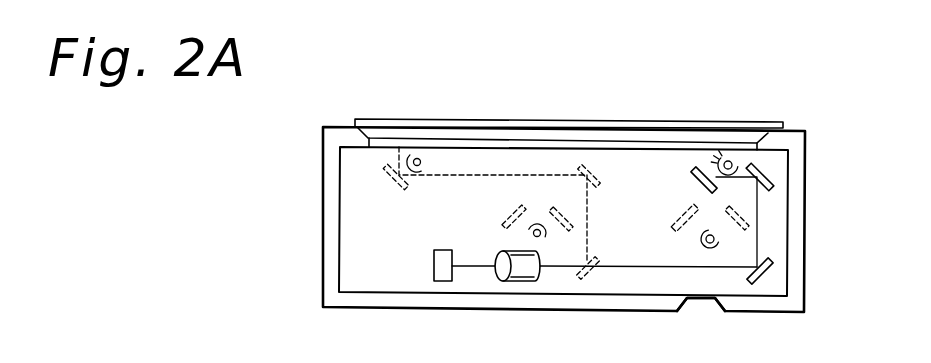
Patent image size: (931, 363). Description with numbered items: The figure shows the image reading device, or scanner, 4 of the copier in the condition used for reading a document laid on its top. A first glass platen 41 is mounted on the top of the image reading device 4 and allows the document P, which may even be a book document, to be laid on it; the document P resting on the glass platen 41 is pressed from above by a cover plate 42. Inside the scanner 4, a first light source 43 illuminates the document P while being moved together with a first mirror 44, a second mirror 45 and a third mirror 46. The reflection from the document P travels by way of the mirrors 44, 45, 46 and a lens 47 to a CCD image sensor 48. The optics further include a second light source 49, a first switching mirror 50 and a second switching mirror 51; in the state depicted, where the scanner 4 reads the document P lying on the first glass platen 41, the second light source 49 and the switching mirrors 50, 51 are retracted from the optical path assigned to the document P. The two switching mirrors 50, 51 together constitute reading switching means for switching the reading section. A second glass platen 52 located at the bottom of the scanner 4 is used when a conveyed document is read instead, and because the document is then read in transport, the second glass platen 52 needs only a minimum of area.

The image reading device 4 is at (822, 129).
The first glass platen 41 is at (497, 145).
The cover plate 42 is at (390, 119).
The document P is at (445, 137).
The first light source 43 is at (733, 158).
The first mirror 44 is at (694, 171).
The second mirror 45 is at (758, 166).
The third mirror 46 is at (772, 272).
The lens 47 is at (518, 282).
The CCD image sensor 48 is at (445, 282).
The second light source 49 is at (718, 242).
The first switching mirror 50 is at (686, 205).
The second switching mirror 51 is at (746, 221).
The second glass platen 52 is at (700, 302).